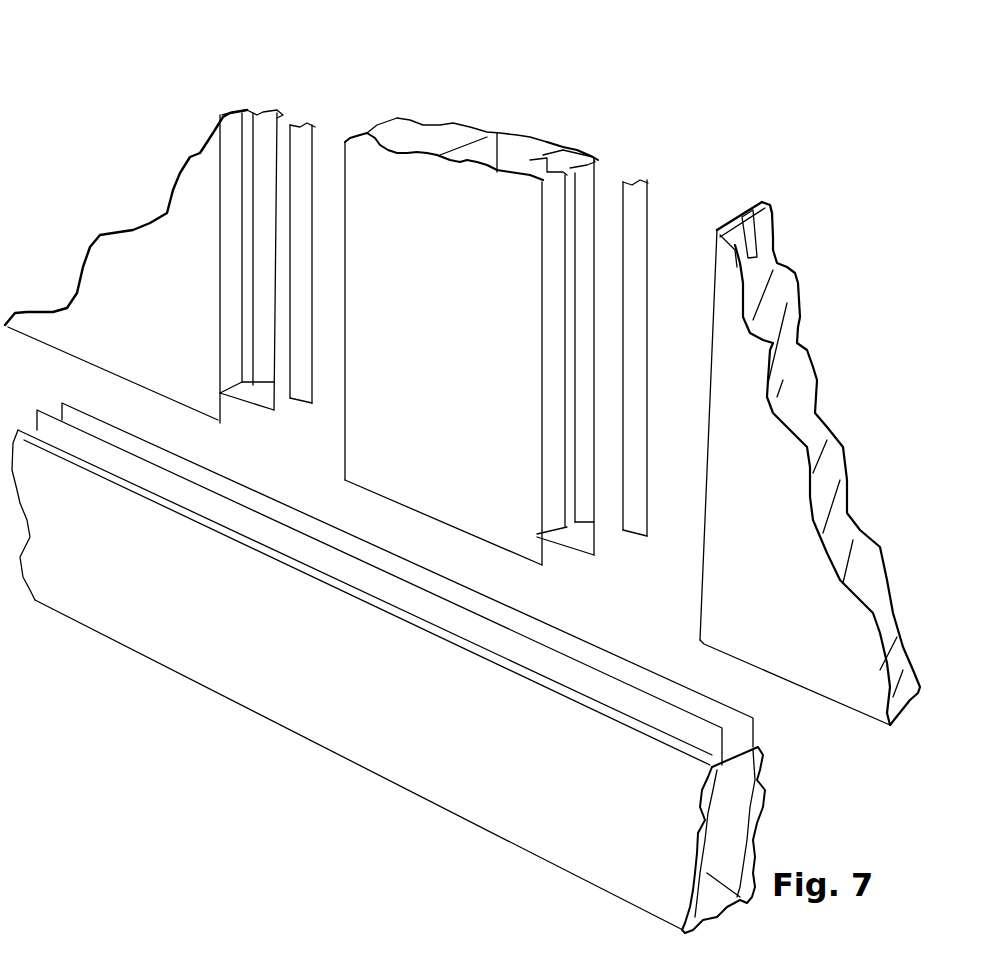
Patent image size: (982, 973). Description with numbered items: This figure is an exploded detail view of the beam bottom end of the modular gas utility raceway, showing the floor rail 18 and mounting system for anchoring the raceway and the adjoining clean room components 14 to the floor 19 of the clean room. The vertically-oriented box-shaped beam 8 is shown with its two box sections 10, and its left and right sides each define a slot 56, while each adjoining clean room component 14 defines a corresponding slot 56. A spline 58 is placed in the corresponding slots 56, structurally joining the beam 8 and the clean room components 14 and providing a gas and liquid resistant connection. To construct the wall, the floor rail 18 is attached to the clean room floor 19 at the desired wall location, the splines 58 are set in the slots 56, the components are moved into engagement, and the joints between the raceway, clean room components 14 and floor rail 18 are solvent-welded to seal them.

The box-shaped beam 8 is at (490, 130).
The box section 10 is at (418, 123).
The clean room component 14 is at (168, 237).
The floor rail 18 is at (228, 632).
The floor 19 is at (201, 824).
The slot 56 is at (250, 128).
The spline 58 is at (305, 126).